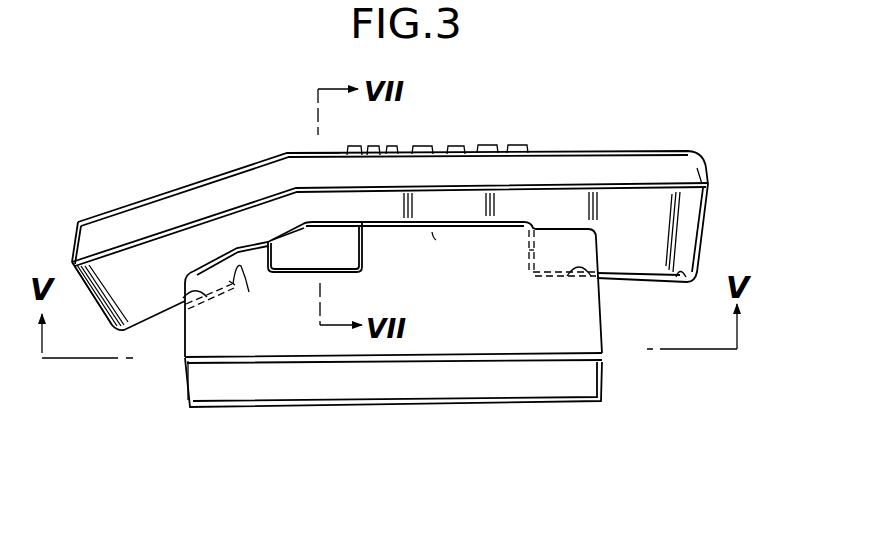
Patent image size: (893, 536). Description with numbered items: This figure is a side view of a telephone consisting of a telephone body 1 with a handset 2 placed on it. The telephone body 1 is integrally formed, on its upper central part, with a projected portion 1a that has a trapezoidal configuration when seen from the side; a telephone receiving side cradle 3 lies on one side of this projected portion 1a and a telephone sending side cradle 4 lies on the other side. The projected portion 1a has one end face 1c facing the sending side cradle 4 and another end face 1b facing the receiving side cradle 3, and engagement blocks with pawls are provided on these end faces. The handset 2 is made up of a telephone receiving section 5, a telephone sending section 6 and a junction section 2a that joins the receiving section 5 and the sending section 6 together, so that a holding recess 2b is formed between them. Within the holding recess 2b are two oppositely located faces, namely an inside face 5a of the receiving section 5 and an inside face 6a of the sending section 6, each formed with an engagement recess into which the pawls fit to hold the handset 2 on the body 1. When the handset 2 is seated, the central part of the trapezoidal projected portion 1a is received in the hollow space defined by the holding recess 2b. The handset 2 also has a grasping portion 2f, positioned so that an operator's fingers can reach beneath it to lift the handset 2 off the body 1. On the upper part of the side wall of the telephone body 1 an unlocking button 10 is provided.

The telephone body 1 is at (557, 401).
The projected portion 1a is at (484, 250).
The other end face of the projected portion 1b is at (531, 240).
The one end face of the projected portion 1c is at (232, 283).
The handset 2 is at (125, 205).
The junction section 2a is at (462, 172).
The holding recess 2b is at (432, 232).
The grasping portion 2f is at (285, 141).
The telephone receiving side cradle 3 is at (598, 280).
The telephone sending side cradle 4 is at (180, 304).
The telephone receiving section 5 is at (682, 283).
The inside face of the receiving section 5a is at (530, 260).
The telephone sending section 6 is at (107, 297).
The inside face of the sending section 6a is at (248, 292).
The unlocking button 10 is at (343, 224).